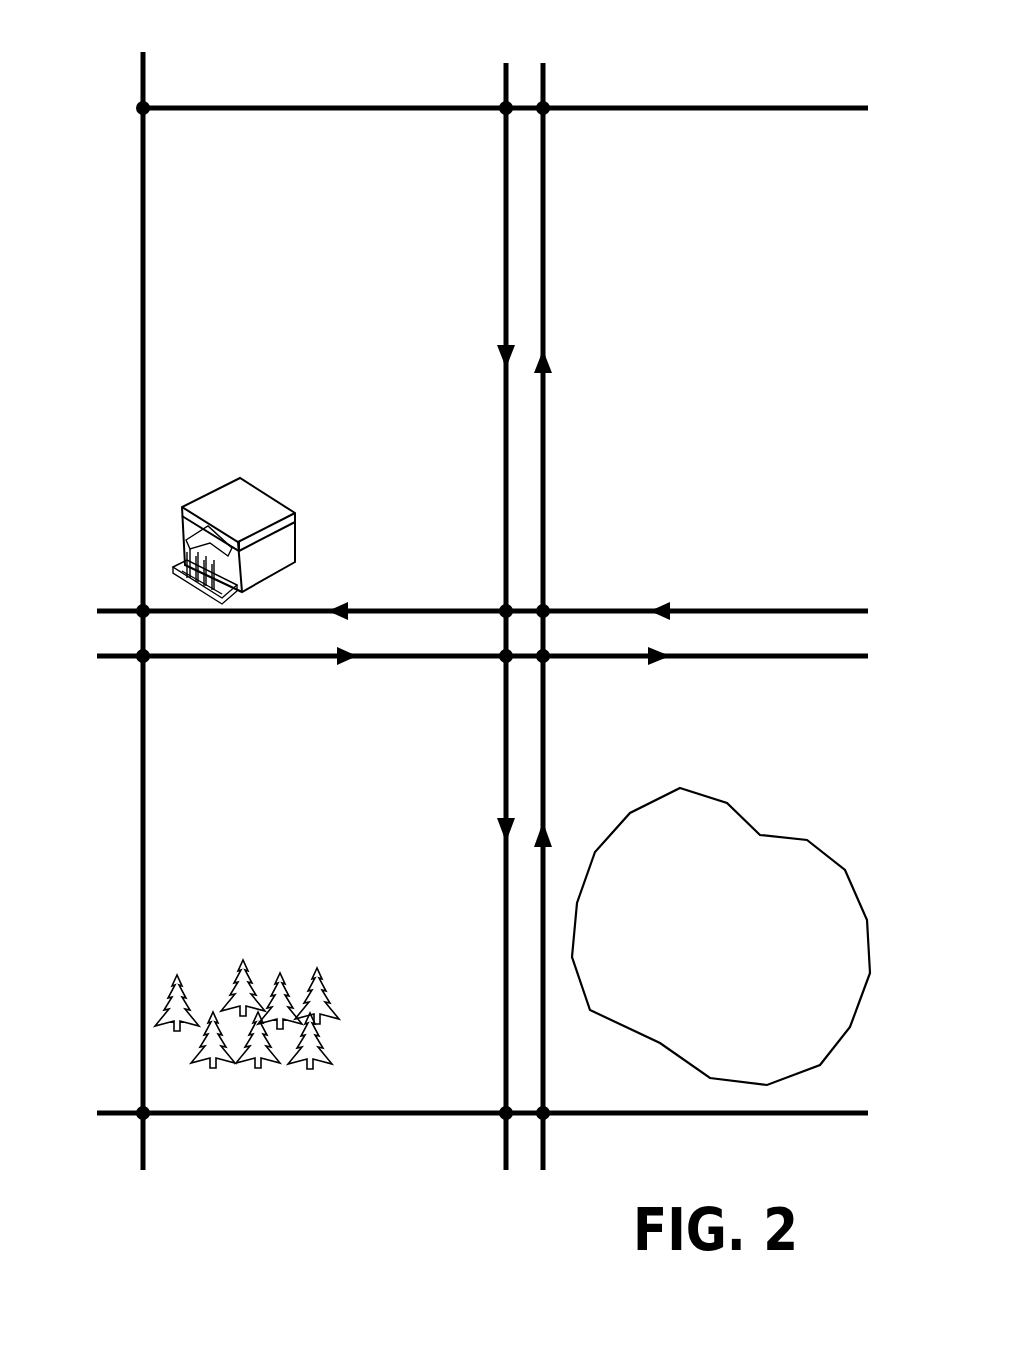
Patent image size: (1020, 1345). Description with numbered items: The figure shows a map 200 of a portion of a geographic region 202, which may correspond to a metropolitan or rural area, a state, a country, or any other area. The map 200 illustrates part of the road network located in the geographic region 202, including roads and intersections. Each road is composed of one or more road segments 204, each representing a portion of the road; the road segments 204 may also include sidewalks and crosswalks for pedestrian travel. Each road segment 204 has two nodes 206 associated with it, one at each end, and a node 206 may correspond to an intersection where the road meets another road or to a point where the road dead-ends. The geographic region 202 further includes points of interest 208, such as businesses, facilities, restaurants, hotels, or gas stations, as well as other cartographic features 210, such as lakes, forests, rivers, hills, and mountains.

The map 200 is at (601, 279).
The geographic region 202 is at (907, 364).
The road segments 204 is at (367, 107).
The nodes 206 is at (143, 108).
The points of interest 208 is at (240, 478).
The cartographic features 210 is at (727, 803).